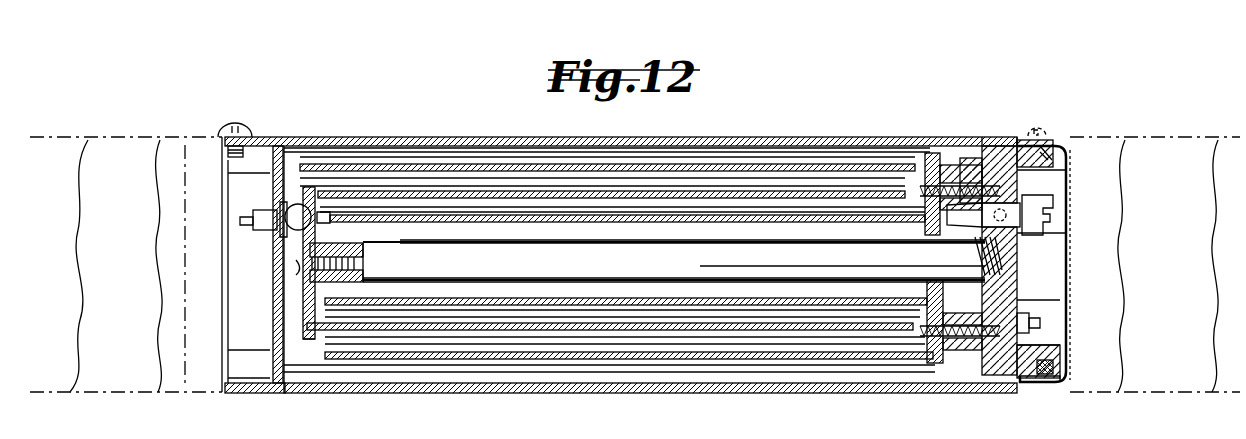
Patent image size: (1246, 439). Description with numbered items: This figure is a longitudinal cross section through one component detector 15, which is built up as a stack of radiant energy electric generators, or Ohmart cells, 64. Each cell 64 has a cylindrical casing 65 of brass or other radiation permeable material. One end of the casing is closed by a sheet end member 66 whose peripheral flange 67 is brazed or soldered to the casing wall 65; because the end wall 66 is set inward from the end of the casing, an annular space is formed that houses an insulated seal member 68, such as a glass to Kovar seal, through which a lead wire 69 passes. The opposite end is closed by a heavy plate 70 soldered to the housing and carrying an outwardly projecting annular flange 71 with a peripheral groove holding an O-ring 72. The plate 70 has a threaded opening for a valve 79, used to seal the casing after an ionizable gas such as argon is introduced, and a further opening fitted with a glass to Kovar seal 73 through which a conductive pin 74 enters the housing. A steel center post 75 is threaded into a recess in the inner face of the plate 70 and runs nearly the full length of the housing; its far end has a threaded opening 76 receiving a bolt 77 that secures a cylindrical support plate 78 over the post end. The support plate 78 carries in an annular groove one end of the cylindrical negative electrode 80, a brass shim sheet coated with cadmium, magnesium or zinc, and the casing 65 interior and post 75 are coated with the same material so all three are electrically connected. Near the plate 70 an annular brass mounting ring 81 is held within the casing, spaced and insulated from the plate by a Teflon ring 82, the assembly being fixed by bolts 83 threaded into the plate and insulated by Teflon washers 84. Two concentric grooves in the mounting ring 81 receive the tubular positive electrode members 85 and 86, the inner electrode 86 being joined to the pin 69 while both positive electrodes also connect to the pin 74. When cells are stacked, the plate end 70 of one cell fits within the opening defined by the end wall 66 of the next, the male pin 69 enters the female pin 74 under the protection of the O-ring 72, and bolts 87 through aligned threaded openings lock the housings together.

The detector 15 is at (806, 112).
The radiant energy electric generator 64 is at (103, 145).
The cylindrical casing 65 is at (478, 137).
The sheet end member 66 is at (283, 150).
The peripheral flange 67 is at (240, 383).
The insulated seal member 68 is at (262, 232).
The lead wire 69 is at (238, 221).
The heavy plate 70 is at (1020, 284).
The annular flange 71 is at (1030, 382).
The O-ring 72 is at (1045, 376).
The glass to Kovar seal 73 is at (1022, 318).
The conductive pin 74 is at (1040, 322).
The center post 75 is at (682, 259).
The threaded opening 76 is at (360, 248).
The bolt 77 is at (300, 275).
The cylindrical support plate 78 is at (309, 339).
The valve 79 is at (1040, 207).
The negative electrode 80 is at (803, 320).
The mounting ring 81 is at (936, 165).
The Teflon ring 82 is at (980, 165).
The bolts 83 is at (960, 180).
The Teflon washers 84 is at (916, 165).
The positive electrode member 85 is at (563, 167).
The positive electrode member 86 is at (498, 232).
The bolts 87 is at (240, 125).